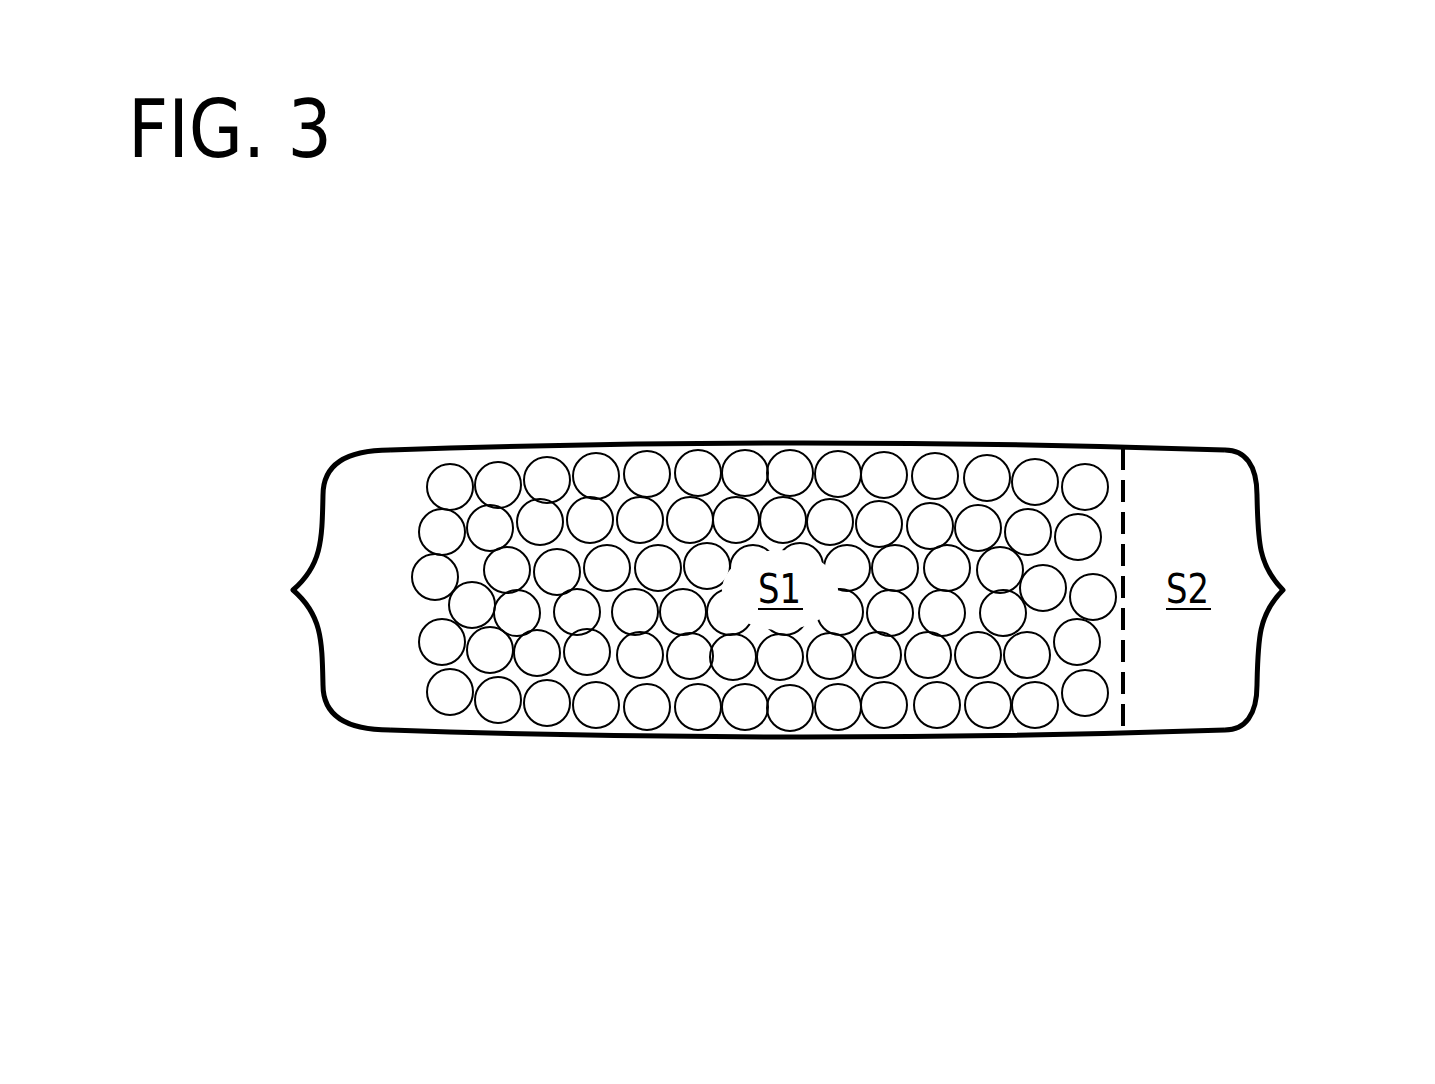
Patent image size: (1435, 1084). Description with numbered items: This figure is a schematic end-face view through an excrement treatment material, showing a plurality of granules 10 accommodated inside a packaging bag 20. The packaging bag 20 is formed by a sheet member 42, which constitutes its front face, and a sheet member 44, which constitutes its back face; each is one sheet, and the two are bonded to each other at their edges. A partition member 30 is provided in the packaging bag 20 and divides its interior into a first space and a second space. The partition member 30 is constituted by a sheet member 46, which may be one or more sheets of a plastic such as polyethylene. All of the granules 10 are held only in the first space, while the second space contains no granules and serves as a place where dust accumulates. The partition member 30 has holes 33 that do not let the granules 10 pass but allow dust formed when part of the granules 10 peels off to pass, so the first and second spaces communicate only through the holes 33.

The granules 10 is at (546, 475).
The packaging bag 20 is at (807, 591).
The sheet member 42 is at (820, 442).
The sheet member 44 is at (840, 743).
The partition member 30 is at (1269, 538).
The sheet member 46 is at (1128, 490).
The hole 33 is at (1126, 708).